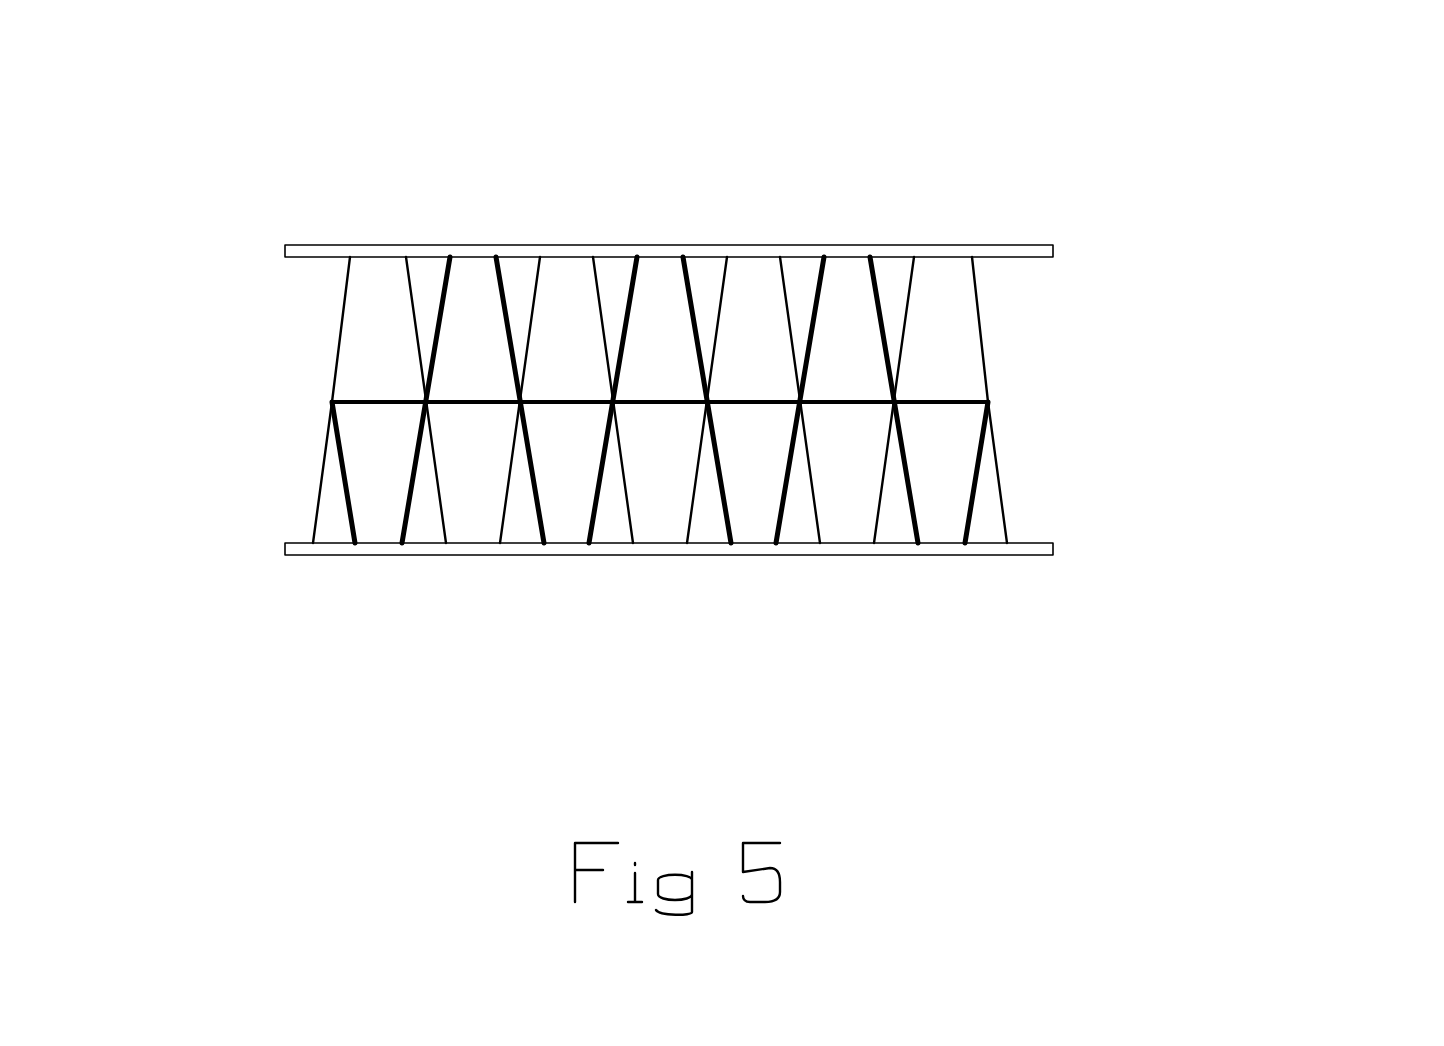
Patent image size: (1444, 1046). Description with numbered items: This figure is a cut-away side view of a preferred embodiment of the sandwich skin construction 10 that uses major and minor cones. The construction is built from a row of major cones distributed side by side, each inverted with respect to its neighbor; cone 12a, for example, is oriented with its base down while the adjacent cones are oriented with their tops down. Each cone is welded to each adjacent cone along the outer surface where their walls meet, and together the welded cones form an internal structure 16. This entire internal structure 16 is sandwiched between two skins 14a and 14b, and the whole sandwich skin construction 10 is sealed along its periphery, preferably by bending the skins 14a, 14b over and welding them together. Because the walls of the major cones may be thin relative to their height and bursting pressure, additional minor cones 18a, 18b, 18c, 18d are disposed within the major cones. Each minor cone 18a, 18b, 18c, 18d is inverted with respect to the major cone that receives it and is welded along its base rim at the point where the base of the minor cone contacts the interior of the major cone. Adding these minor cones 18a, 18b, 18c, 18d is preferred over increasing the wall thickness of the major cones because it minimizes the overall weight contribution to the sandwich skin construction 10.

The sandwich skin construction 10 is at (1237, 585).
The cone 12a is at (341, 330).
The skin 14a is at (452, 555).
The skin 14b is at (320, 247).
The internal structure 16 is at (1047, 510).
The minor cone 18a is at (342, 482).
The minor cone 18b is at (505, 293).
The minor cone 18c is at (596, 532).
The minor cone 18d is at (691, 290).